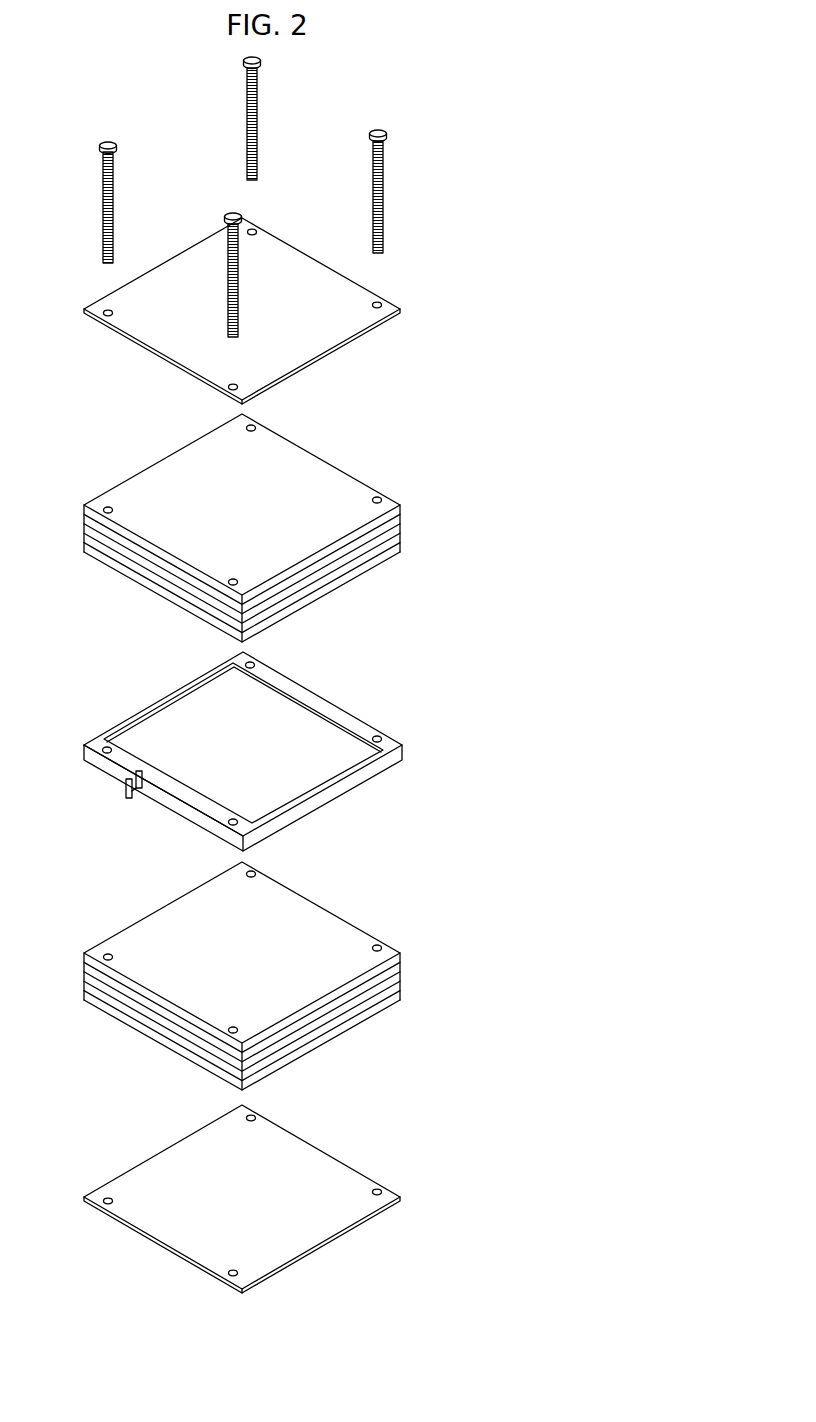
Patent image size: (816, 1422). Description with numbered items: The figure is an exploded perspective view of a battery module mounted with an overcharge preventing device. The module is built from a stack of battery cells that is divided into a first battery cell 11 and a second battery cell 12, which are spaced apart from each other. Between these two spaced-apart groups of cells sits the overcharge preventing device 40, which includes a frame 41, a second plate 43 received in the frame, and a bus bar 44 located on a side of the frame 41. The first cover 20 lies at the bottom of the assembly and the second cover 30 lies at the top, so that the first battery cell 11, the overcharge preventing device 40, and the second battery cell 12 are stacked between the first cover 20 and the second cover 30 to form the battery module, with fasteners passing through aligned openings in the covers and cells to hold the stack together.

The second cover 30 is at (302, 338).
The second battery cell 12 is at (403, 507).
The overcharge preventing device 40 is at (398, 706).
The second plate 43 is at (163, 735).
The frame 41 is at (173, 805).
The bus bar 44 is at (127, 793).
The first battery cell 11 is at (403, 955).
The first cover 20 is at (330, 1177).